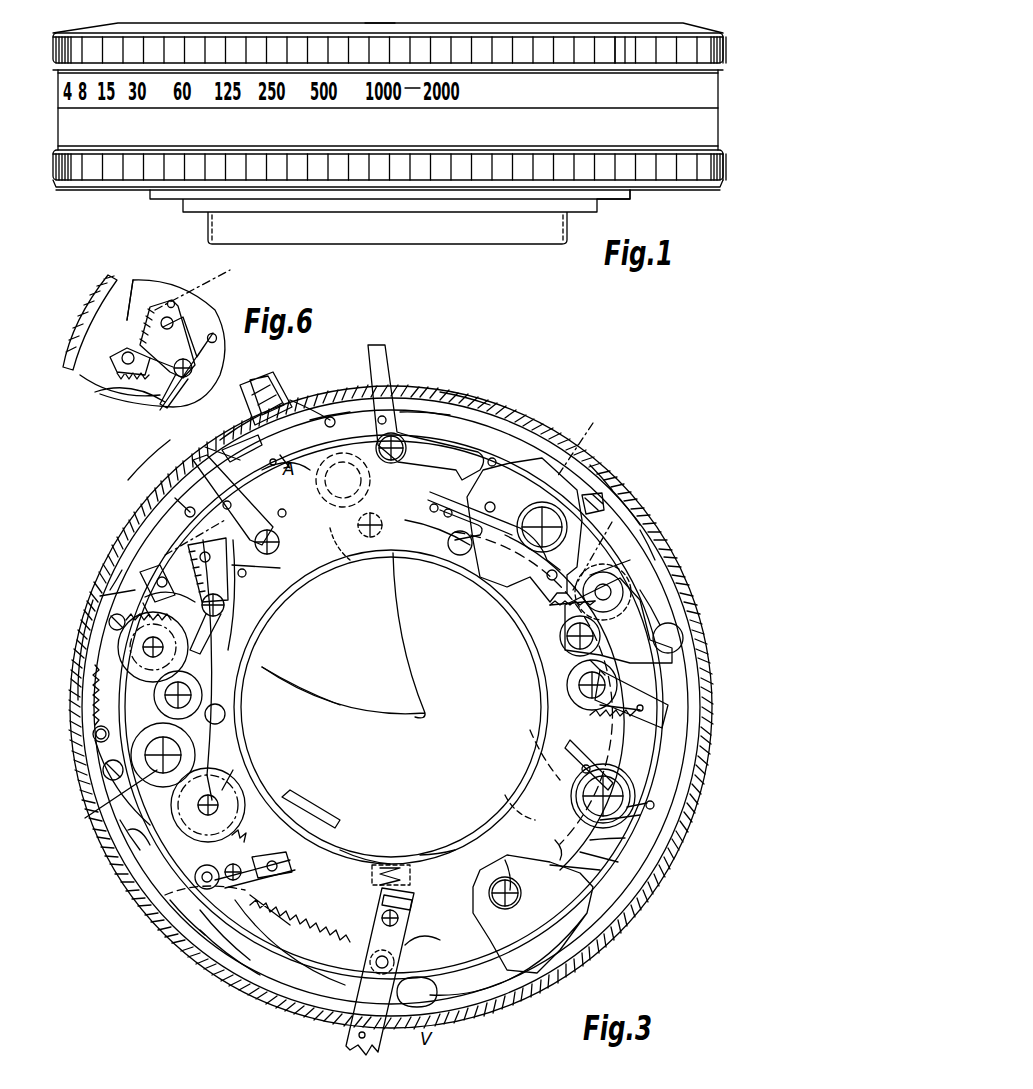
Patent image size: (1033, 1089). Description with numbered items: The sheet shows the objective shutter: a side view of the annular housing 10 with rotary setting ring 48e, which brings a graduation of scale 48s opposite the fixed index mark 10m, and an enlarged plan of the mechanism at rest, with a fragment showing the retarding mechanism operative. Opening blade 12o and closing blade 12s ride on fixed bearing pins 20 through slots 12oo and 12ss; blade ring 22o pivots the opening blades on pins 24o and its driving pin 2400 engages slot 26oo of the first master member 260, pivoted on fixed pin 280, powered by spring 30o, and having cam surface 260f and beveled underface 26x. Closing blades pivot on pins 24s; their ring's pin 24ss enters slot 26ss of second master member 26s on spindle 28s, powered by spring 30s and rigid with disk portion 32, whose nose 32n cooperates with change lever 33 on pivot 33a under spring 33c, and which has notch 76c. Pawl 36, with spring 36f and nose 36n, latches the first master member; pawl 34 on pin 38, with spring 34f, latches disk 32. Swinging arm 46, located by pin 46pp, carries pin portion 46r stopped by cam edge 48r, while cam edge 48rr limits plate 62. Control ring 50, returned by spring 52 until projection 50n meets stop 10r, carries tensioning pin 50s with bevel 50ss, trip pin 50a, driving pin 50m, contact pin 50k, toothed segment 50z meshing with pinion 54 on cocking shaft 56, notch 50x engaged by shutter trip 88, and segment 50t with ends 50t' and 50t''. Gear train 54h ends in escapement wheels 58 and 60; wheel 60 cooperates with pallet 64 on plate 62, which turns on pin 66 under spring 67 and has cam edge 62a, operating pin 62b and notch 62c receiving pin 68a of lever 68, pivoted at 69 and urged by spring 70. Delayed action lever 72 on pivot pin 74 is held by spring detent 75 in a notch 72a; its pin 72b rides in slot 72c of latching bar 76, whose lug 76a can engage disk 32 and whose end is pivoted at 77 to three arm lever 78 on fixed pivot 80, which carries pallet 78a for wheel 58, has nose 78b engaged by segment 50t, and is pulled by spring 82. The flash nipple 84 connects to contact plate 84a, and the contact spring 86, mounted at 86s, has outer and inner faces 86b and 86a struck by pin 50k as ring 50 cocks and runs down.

In FIG. 1, the housing 10 is at (628, 191).
In FIG. 6, the housing 10 is at (85, 320).
In FIG. 3, the housing 10 is at (465, 390).
In FIG. 1, the fixed index mark 10m is at (388, 23).
In FIG. 3, the stationary stop 10r is at (110, 703).
In FIG. 1, the shutter speed scale 48s is at (412, 90).
In FIG. 1, the rotary setting ring 48e is at (625, 50).
In FIG. 3, the cam edge 48r is at (612, 522).
In FIG. 6, the cam edge 48rr is at (230, 270).
In FIG. 3, the cam edge 48rr is at (165, 555).
In FIG. 6, the control ring 50 is at (134, 280).
In FIG. 3, the control ring 50 is at (428, 408).
In FIG. 3, the contact making pin 50k is at (332, 415).
In FIG. 3, the driving pin 50m is at (160, 488).
In FIG. 3, the tensioning pin 50s is at (600, 485).
In FIG. 3, the beveled part of tensioning pin 50ss is at (620, 500).
In FIG. 3, the notch 50x is at (640, 530).
In FIG. 3, the trip pin 50a is at (655, 615).
In FIG. 3, the toothed gear segment 50z is at (115, 600).
In FIG. 3, the projection 50n is at (100, 778).
In FIG. 3, the segment 50t is at (164, 933).
In FIG. 3, the segment end 50t' is at (442, 990).
In FIG. 3, the segment end 50t'' is at (106, 844).
In FIG. 3, the return spring 52 is at (82, 680).
In FIG. 3, the pinion 54 is at (160, 775).
In FIG. 3, the gear train system 54h is at (221, 764).
In FIG. 3, the cocking shaft 56 is at (115, 805).
In FIG. 3, the escapement wheel 58 is at (228, 780).
In FIG. 6, the escapement wheel 60 is at (118, 376).
In FIG. 3, the escapement wheel 60 is at (190, 647).
In FIG. 6, the plate 62 is at (152, 303).
In FIG. 3, the plate 62 is at (232, 615).
In FIG. 6, the cam edge 62a is at (125, 302).
In FIG. 3, the cam edge 62a is at (175, 498).
In FIG. 6, the operating pin 62b is at (173, 321).
In FIG. 3, the operating pin 62b is at (188, 514).
In FIG. 6, the notch 62c is at (173, 300).
In FIG. 3, the notch 62c is at (200, 555).
In FIG. 6, the vibrating anchor 64 is at (100, 385).
In FIG. 3, the vibrating anchor 64 is at (140, 580).
In FIG. 6, the pin 66 is at (178, 382).
In FIG. 3, the pin 66 is at (227, 600).
In FIG. 3, the spring 67 is at (247, 575).
In FIG. 6, the lever 68 is at (165, 368).
In FIG. 3, the lever 68 is at (197, 462).
In FIG. 3, the pin 68a is at (230, 503).
In FIG. 3, the pin 69 is at (280, 546).
In FIG. 3, the spring 70 is at (282, 517).
In FIG. 3, the delayed action control lever 72 is at (350, 1030).
In FIG. 3, the detent notches 72a is at (412, 897).
In FIG. 3, the pin 72b is at (376, 964).
In FIG. 3, the slot 72c is at (420, 940).
In FIG. 3, the pivot pin 74 is at (382, 918).
In FIG. 3, the spring detent 75 is at (388, 862).
In FIG. 3, the latching bar 76 is at (268, 970).
In FIG. 3, the lug 76a is at (600, 870).
In FIG. 3, the notch 76c is at (640, 815).
In FIG. 3, the pivot 77 is at (200, 877).
In FIG. 3, the three arm lever 78 is at (258, 880).
In FIG. 3, the vibrating anchor 78a is at (290, 855).
In FIG. 3, the operating nose 78b is at (165, 895).
In FIG. 3, the fixed pivot 80 is at (312, 792).
In FIG. 3, the spring 82 is at (225, 955).
In FIG. 3, the flash circuit connection nipple 84 is at (246, 398).
In FIG. 3, the contact plate 84a is at (305, 398).
In FIG. 3, the contact spring 86 is at (238, 432).
In FIG. 3, the inner face 86a is at (273, 475).
In FIG. 3, the outer face 86b is at (347, 422).
In FIG. 3, the mounting point 86s is at (205, 447).
In FIG. 3, the shutter trip 88 is at (386, 356).
In FIG. 3, the closing blade 12s is at (375, 708).
In FIG. 3, the opening blade 12o is at (355, 852).
In FIG. 3, the slot 12oo is at (252, 668).
In FIG. 3, the slot 12ss is at (352, 541).
In FIG. 3, the fixed bearing pins 20 is at (200, 670).
In FIG. 3, the blade ring 22o is at (438, 855).
In FIG. 3, the pivot pins 24o is at (225, 712).
In FIG. 3, the pivot pins 24s is at (395, 525).
In FIG. 3, the driving pin 24ss is at (520, 815).
In FIG. 3, the driving pin 2400 is at (457, 555).
In FIG. 3, the second master member 26s is at (625, 840).
In FIG. 3, the driving slot 26ss is at (575, 843).
In FIG. 3, the beveled underface 26x is at (590, 439).
In FIG. 3, the first master member 260 is at (505, 430).
In FIG. 3, the cam surface 260f is at (588, 488).
In FIG. 3, the slot 26oo is at (494, 522).
In FIG. 3, the fixed pin 280 is at (543, 515).
In FIG. 3, the fixed bearing pin 28s is at (600, 775).
In FIG. 3, the spring 30o is at (437, 505).
In FIG. 3, the driving spring 30s is at (560, 733).
In FIG. 3, the auxiliary portion 32 is at (660, 792).
In FIG. 3, the nose 32n is at (618, 862).
In FIG. 3, the change lever 33 is at (570, 928).
In FIG. 3, the stationary pivot 33a is at (510, 858).
In FIG. 3, the spring 33c is at (524, 893).
In FIG. 3, the latching pawl 34 is at (640, 708).
In FIG. 3, the lever finger 34f is at (600, 710).
In FIG. 3, the latching pawl 36 is at (635, 620).
In FIG. 3, the spring 36f is at (550, 605).
In FIG. 3, the nose 36n is at (683, 640).
In FIG. 3, the pin 38 is at (580, 685).
In FIG. 3, the arm 46 is at (612, 560).
In FIG. 3, the upwardly extending pin portion 46r is at (630, 560).
In FIG. 3, the pin 46pp is at (590, 660).